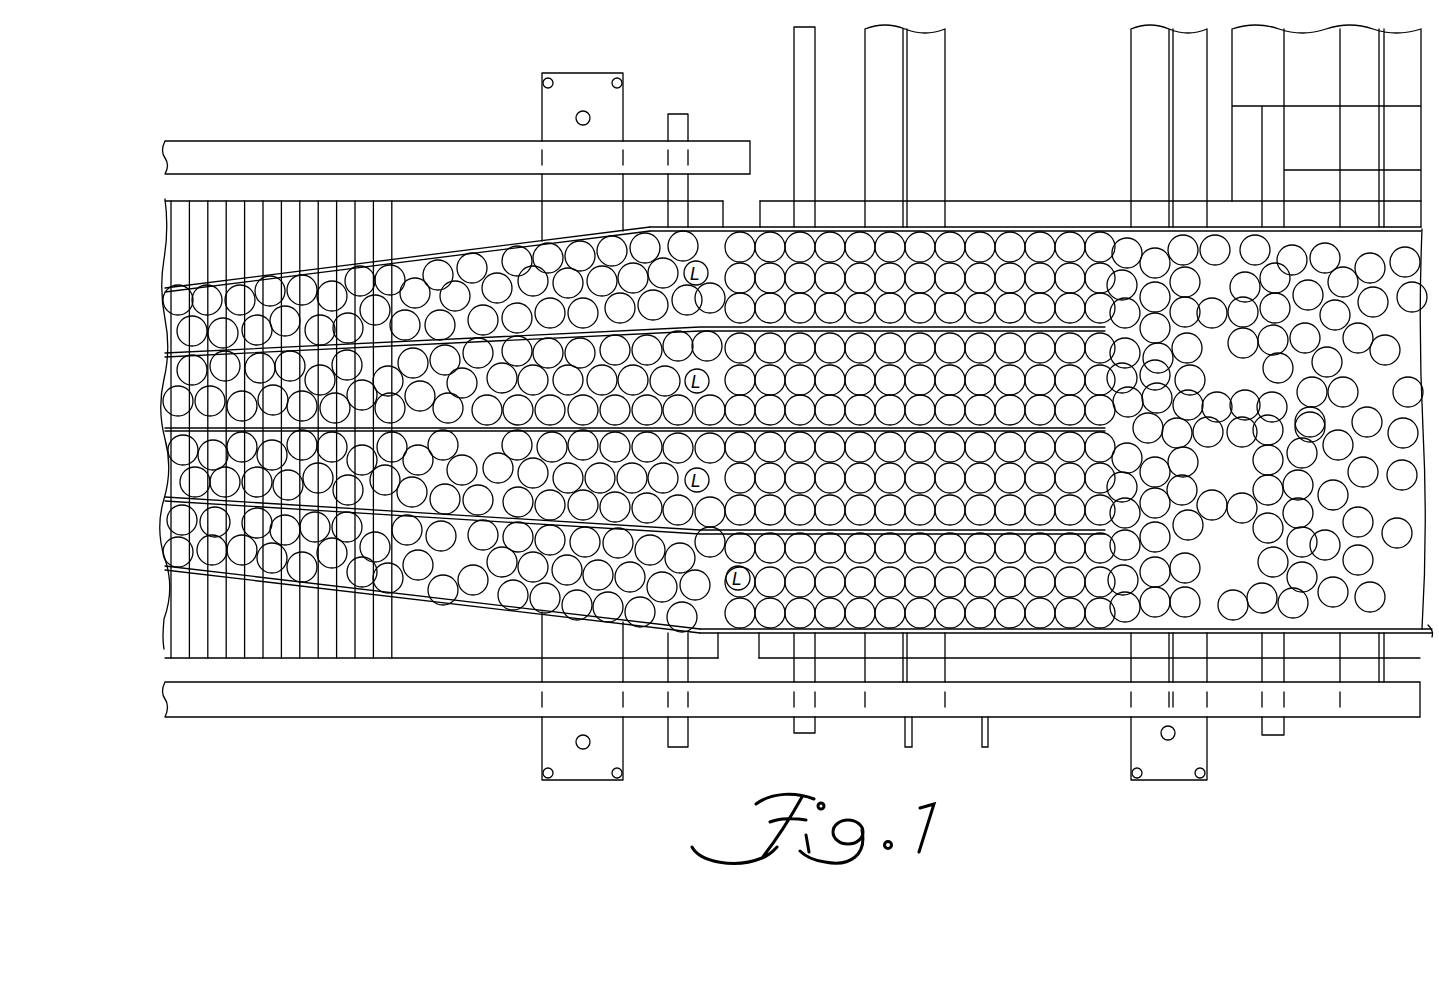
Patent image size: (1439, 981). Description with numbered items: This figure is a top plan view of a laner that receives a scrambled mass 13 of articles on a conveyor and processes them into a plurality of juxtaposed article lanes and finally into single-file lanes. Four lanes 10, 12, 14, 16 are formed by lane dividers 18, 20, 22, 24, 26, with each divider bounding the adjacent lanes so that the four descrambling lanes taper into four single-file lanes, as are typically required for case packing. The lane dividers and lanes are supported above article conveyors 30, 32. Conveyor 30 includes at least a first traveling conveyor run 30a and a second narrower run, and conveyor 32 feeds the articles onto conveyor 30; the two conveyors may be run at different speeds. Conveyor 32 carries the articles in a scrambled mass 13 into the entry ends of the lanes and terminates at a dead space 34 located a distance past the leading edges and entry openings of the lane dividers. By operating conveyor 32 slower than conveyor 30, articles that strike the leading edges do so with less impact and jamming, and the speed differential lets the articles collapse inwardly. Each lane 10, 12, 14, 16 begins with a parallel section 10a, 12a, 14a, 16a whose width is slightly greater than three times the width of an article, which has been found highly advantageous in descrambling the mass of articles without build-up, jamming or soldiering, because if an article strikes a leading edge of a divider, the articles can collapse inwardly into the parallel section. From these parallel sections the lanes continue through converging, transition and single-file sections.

The lane 10 is at (1242, 284).
The parallel section 10a is at (1007, 281).
The lane 12 is at (1253, 383).
The parallel section 12a is at (1007, 381).
The scrambled mass 13 is at (1402, 405).
The lane 14 is at (1247, 483).
The parallel section 14a is at (1012, 483).
The lane 16 is at (1247, 584).
The parallel section 16a is at (1010, 583).
The lane divider 18 is at (417, 257).
The lane divider 20 is at (507, 303).
The lane divider 22 is at (467, 431).
The lane divider 24 is at (449, 627).
The lane divider 26 is at (517, 619).
The article conveyor 30 is at (250, 190).
The first traveling conveyor run 30a is at (362, 199).
The article conveyor 32 is at (770, 198).
The dead space 34 is at (737, 650).